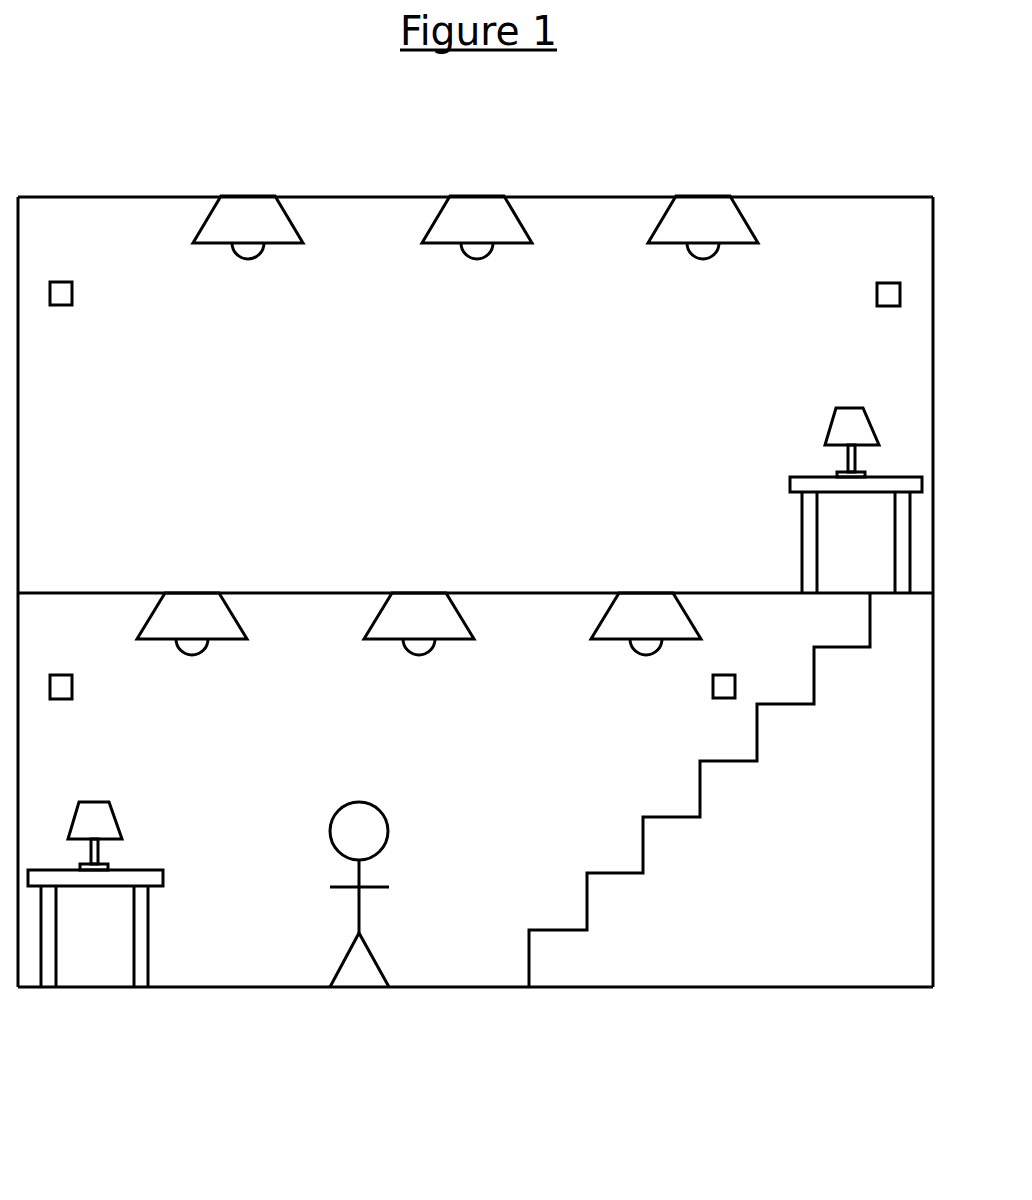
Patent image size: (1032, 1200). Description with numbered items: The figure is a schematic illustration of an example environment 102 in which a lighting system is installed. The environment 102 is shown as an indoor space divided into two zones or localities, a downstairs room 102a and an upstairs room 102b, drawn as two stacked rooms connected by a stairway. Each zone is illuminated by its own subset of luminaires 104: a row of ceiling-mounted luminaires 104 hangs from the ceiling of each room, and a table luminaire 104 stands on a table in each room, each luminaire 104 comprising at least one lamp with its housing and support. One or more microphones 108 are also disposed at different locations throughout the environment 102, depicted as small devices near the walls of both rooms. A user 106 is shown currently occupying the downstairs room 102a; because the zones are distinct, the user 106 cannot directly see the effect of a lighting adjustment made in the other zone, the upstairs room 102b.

The environment 102 is at (475, 582).
The downstairs room 102a is at (490, 975).
The upstairs room 102b is at (132, 212).
The luminaire 104 is at (292, 221).
The user 106 is at (385, 813).
The microphone 108 is at (73, 290).